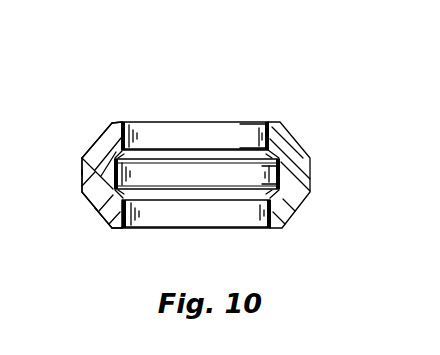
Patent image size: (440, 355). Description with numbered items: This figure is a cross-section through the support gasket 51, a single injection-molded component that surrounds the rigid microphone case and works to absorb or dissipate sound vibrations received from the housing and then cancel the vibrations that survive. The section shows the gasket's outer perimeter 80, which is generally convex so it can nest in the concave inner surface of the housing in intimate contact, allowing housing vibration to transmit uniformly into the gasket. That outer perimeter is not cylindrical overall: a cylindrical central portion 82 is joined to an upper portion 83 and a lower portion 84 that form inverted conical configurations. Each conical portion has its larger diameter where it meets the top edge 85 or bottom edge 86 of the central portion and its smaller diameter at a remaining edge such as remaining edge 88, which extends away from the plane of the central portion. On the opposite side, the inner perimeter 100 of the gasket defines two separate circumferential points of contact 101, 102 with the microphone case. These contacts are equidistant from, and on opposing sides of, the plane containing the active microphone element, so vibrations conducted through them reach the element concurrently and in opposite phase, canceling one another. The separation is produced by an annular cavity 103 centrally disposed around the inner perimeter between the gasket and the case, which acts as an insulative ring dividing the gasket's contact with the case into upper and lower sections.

The support gasket 51 is at (206, 121).
The outer perimeter 80 is at (306, 146).
The central portion 82 is at (80, 178).
The upper portion 83 is at (98, 130).
The lower portion 84 is at (92, 216).
The top edge 85 is at (80, 158).
The bottom edge 86 is at (80, 196).
The remaining edge 88 is at (118, 123).
The inner perimeter 100 is at (229, 168).
The circumferential point of contact 101 is at (248, 138).
The circumferential point of contact 102 is at (288, 210).
The annular cavity 103 is at (261, 172).